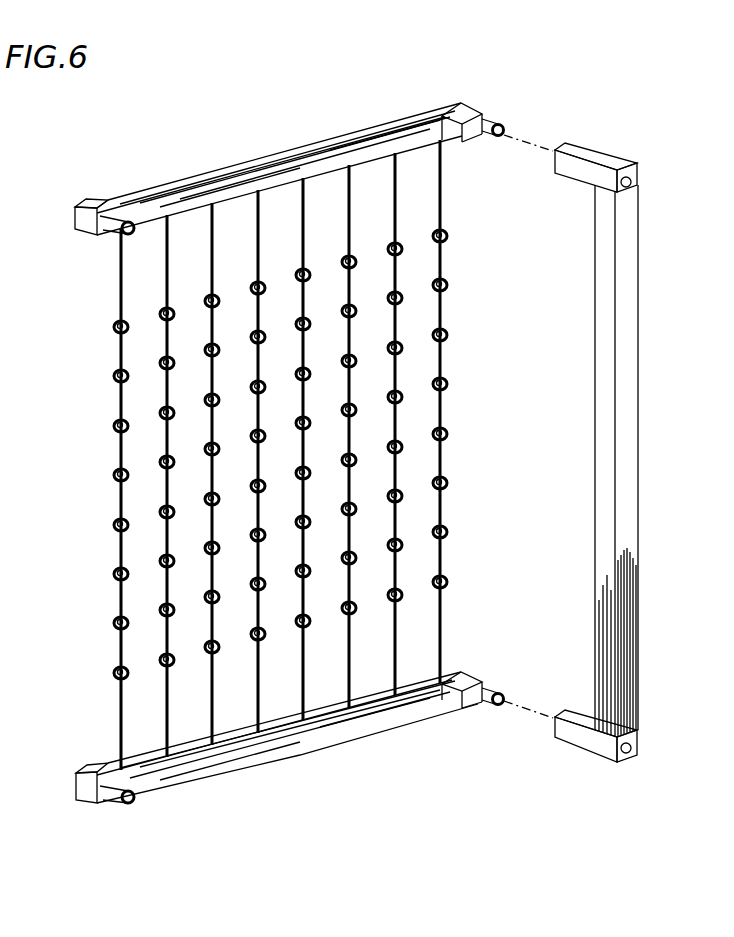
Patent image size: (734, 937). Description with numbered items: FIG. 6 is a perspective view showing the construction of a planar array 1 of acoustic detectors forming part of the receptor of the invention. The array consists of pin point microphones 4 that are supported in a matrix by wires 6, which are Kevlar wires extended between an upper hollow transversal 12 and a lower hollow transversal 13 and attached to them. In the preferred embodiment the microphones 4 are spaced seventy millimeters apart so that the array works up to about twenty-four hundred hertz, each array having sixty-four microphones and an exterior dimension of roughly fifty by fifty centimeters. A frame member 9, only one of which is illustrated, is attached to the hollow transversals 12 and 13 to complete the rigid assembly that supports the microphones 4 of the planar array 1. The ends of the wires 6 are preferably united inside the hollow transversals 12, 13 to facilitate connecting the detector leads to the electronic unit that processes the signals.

The planar array 1 is at (456, 405).
The microphone 4 is at (114, 573).
The wire 6 is at (70, 499).
The frame member 9 is at (638, 330).
The hollow transversal 12 is at (255, 146).
The hollow transversal 13 is at (331, 749).